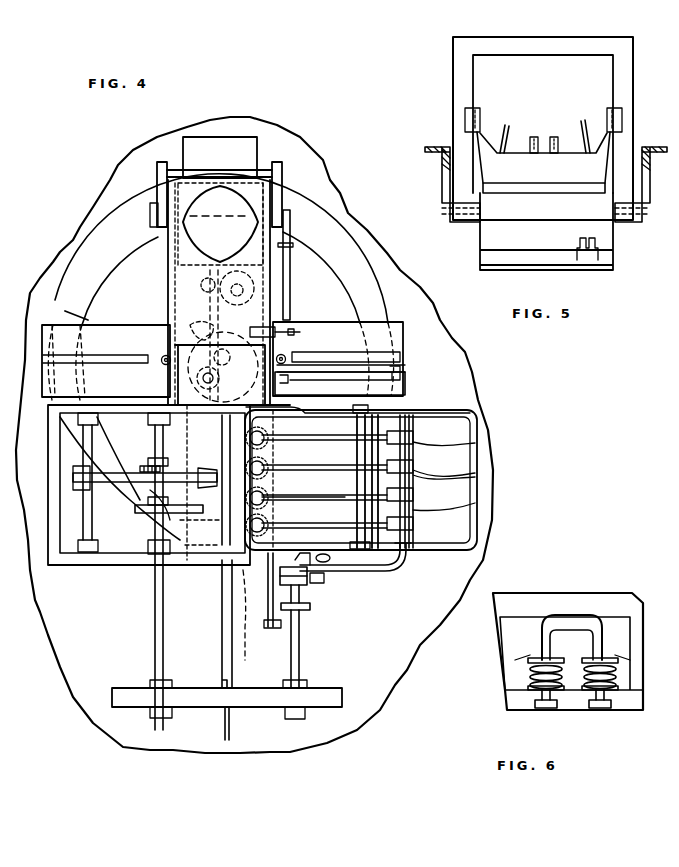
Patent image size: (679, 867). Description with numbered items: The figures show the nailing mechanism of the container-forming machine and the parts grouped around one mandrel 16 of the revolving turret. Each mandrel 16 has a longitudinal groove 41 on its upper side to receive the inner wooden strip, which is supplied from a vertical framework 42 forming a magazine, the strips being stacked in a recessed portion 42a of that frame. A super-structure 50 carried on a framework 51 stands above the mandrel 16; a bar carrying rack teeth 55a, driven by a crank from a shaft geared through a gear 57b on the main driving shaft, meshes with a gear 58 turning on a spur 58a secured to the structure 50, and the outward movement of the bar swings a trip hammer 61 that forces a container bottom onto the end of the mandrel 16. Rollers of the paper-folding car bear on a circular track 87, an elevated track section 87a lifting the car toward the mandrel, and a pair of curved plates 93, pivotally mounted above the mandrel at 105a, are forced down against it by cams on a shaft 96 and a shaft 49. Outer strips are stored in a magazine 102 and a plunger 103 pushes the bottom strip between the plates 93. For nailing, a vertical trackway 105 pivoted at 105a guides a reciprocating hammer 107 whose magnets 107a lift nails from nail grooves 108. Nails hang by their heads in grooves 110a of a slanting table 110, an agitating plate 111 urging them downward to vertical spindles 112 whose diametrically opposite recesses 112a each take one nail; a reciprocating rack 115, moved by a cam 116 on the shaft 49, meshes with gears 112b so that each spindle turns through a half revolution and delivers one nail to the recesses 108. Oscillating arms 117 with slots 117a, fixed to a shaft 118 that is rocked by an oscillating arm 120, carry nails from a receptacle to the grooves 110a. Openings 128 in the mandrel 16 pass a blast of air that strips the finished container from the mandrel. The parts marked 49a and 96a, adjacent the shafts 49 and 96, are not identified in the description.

In FIG. 4, the mandrel 16 is at (400, 336).
In FIG. 4, the longitudinal groove 41 is at (336, 362).
In FIG. 4, the vertical framework 42 is at (405, 390).
In FIG. 4, the recessed portion 42a is at (398, 368).
In FIG. 4, the shaft 49 is at (292, 673).
In FIG. 4, the support beam 49a is at (300, 690).
In FIG. 4, the super-structure 50 is at (243, 283).
In FIG. 4, the framework 51 is at (58, 568).
In FIG. 4, the rack teeth 55a is at (218, 305).
In FIG. 4, the gear 57b is at (300, 320).
In FIG. 4, the gear 58 is at (262, 300).
In FIG. 4, the spur 58a is at (278, 275).
In FIG. 4, the trip hammer 61 is at (240, 148).
In FIG. 4, the circular track 87 is at (93, 289).
In FIG. 4, the elevated track section 87a is at (85, 318).
In FIG. 5, the curved plates 93 is at (517, 258).
In FIG. 4, the shaft 96 is at (155, 632).
In FIG. 4, the pipe coupling 96a is at (325, 557).
In FIG. 4, the magazine 102 is at (233, 670).
In FIG. 4, the plunger 103 is at (230, 730).
In FIG. 5, the vertical trackway 105 is at (457, 73).
In FIG. 5, the pivotal connection 105a is at (440, 192).
In FIG. 5, the hammer 107 is at (515, 165).
In FIG. 6, the hammer 107 is at (566, 602).
In FIG. 6, the magnets 107a is at (547, 640).
In FIG. 4, the nail groove 108 is at (268, 444).
In FIG. 4, the slanting table 110 is at (298, 515).
In FIG. 4, the grooves 110a is at (295, 450).
In FIG. 4, the plate 111 is at (475, 477).
In FIG. 4, the vertical spindles 112 is at (268, 505).
In FIG. 4, the recesses 112a is at (268, 470).
In FIG. 4, the gears 112b is at (254, 615).
In FIG. 4, the reciprocating rack 115 is at (302, 596).
In FIG. 4, the cam 116 is at (312, 614).
In FIG. 4, the oscillating arms 117 is at (413, 467).
In FIG. 4, the slots 117a is at (405, 441).
In FIG. 4, the shaft 118 is at (475, 503).
In FIG. 4, the oscillating arm 120 is at (372, 572).
In FIG. 4, the openings 128 is at (165, 361).